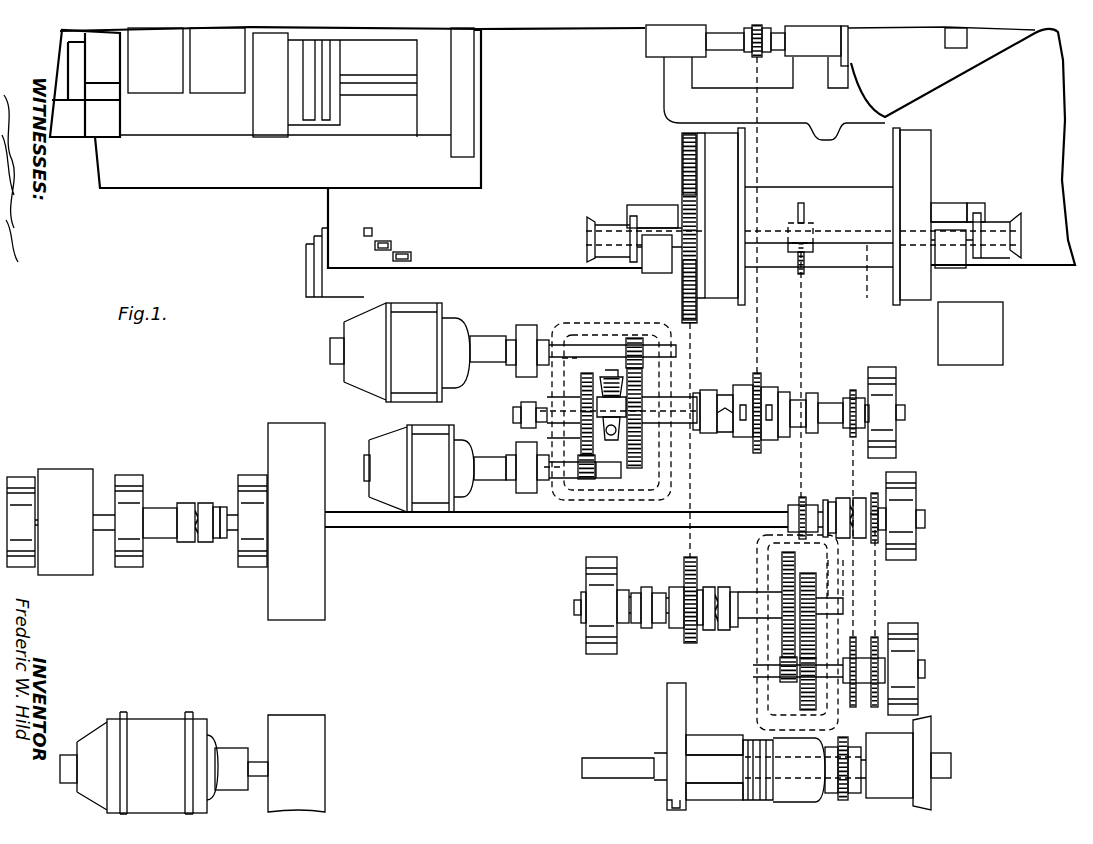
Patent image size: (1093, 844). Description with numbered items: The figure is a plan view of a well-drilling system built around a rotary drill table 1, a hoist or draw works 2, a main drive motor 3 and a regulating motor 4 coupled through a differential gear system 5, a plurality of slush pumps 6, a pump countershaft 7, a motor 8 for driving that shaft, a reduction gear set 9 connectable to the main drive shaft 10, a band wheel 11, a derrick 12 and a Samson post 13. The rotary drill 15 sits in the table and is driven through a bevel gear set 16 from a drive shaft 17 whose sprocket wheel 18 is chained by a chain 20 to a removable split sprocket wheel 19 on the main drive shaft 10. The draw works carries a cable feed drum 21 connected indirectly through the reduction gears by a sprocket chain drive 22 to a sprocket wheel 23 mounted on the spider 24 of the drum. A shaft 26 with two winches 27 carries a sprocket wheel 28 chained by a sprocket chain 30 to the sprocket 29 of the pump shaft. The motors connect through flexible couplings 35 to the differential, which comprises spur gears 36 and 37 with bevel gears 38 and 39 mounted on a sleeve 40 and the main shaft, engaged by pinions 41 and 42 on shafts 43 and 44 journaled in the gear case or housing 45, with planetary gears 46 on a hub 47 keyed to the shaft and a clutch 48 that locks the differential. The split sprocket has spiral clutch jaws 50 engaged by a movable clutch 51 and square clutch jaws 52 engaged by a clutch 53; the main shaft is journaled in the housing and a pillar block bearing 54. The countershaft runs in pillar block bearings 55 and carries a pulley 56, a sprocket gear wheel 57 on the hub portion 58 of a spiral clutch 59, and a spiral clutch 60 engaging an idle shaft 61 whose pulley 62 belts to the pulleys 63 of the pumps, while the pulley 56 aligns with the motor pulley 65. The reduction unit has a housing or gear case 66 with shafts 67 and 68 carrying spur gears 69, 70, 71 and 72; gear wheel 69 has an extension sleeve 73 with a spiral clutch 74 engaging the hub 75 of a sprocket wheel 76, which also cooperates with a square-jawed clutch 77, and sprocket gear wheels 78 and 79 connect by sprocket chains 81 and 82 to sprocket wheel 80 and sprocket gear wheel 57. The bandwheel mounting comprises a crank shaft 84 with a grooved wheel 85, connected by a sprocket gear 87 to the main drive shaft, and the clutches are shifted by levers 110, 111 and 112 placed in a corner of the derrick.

The rotary drill table 1 is at (937, 82).
The hoist or draw works 2 is at (922, 185).
The main drive motor 3 is at (451, 320).
The regulating motor 4 is at (437, 462).
The differential gear system 5 is at (717, 472).
The slush pumps 6 is at (462, 105).
The pump countershaft 7 is at (384, 524).
The motor 8 is at (168, 730).
The reduction gear set 9 is at (770, 652).
The main drive shaft 10 is at (830, 406).
The band wheel 11 is at (705, 740).
The derrick 12 is at (312, 243).
The Samson post 13 is at (997, 345).
The rotary drill 15 is at (945, 37).
The bevel gear set 16 is at (851, 62).
The drive shaft 17 is at (718, 57).
The sprocket wheel 18 is at (757, 57).
The removable split sprocket wheel 19 is at (758, 385).
The chain 20 is at (757, 322).
The cable feed drum 21 is at (800, 205).
The sprocket chain drive 22 is at (698, 310).
The sprocket wheel 23 is at (682, 153).
The spider 24 is at (697, 169).
The shaft 26 is at (864, 280).
The winches 27 is at (603, 225).
The sprocket wheel 28 is at (808, 226).
The sprocket 29 is at (800, 506).
The sprocket chain 30 is at (803, 311).
The flexible couplings 35 is at (523, 335).
The spur gear 36 is at (582, 395).
The spur gear 37 is at (645, 390).
The bevel gear 38 is at (615, 432).
The bevel gear 39 is at (582, 438).
The sleeve 40 is at (681, 424).
The pinion 41 is at (637, 338).
The pinion 42 is at (596, 470).
The shaft 43 is at (578, 345).
The shaft 44 is at (614, 466).
The gear case or housing 45 is at (650, 472).
The planetary gears 46 is at (602, 376).
The hub 47 is at (637, 403).
The clutch 48 is at (516, 402).
The spiral clutch jaws 50 is at (728, 433).
The movable clutch 51 is at (713, 393).
The square clutch jaws 52 is at (786, 393).
The clutch 53 is at (800, 424).
The pillar block bearing 54 is at (902, 433).
The pillar block bearings 55 is at (18, 478).
The pulley 56 is at (313, 593).
The sprocket gear wheel 57 is at (873, 494).
The hub portion 58 is at (917, 527).
The spiral clutch 59 is at (882, 515).
The spiral clutch 60 is at (200, 543).
The idle shaft 61 is at (108, 532).
The pulley 62 is at (64, 575).
The pulleys 63 is at (163, 84).
The motor pulley 65 is at (313, 751).
The housing or gear case 66 is at (760, 563).
The shaft 67 is at (840, 605).
The shaft 68 is at (925, 673).
The gear wheel 69 is at (791, 576).
The spur gear 70 is at (780, 679).
The spur gear 71 is at (816, 586).
The spur gear 72 is at (803, 708).
The extension sleeve 73 is at (748, 598).
The spiral clutch 74 is at (725, 630).
The hub 75 is at (701, 640).
The sprocket wheel 76 is at (682, 642).
The square-jawed clutch 77 is at (644, 587).
The sprocket gear wheel 78 is at (852, 707).
The sprocket gear wheel 79 is at (876, 707).
The sprocket wheel 80 is at (847, 428).
The sprocket chain 81 is at (850, 451).
The sprocket chain 82 is at (868, 577).
The crank shaft 84 is at (941, 770).
The grooved wheel 85 is at (746, 740).
The sprocket gear 87 is at (840, 778).
The lever 110 is at (371, 233).
The lever 111 is at (390, 246).
The lever 112 is at (411, 257).